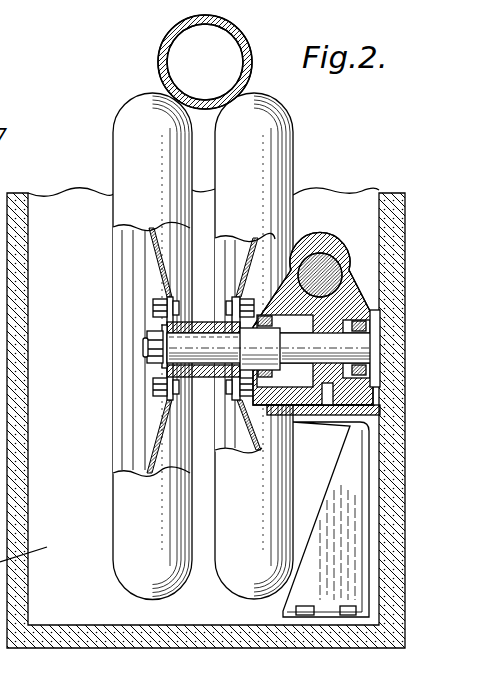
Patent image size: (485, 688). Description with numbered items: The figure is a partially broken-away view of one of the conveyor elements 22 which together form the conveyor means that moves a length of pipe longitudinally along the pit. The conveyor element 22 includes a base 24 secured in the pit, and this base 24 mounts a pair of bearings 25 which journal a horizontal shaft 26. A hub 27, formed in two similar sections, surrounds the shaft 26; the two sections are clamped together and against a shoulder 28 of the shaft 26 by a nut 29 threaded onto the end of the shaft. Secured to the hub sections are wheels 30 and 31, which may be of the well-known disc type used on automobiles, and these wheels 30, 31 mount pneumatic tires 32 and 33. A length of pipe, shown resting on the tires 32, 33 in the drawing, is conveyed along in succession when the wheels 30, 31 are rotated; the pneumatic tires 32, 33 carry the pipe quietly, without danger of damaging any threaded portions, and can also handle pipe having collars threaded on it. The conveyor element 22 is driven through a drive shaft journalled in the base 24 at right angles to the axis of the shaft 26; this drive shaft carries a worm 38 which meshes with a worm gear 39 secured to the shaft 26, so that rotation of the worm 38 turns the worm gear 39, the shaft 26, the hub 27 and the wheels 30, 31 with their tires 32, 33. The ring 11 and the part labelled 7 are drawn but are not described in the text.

The lifting ring 11 is at (252, 66).
The conveyor element 22 is at (308, 184).
The base 24 is at (346, 564).
The bearings 25 is at (276, 321).
The horizontal shaft 26 is at (162, 370).
The hub 27 is at (214, 368).
The shoulder 28 is at (238, 345).
The nut 29 is at (143, 352).
The wheel 30 is at (157, 262).
The wheel 31 is at (236, 300).
The pneumatic tire 32 is at (128, 146).
The pneumatic tire 33 is at (291, 126).
The worm 38 is at (348, 242).
The worm gear 39 is at (319, 415).